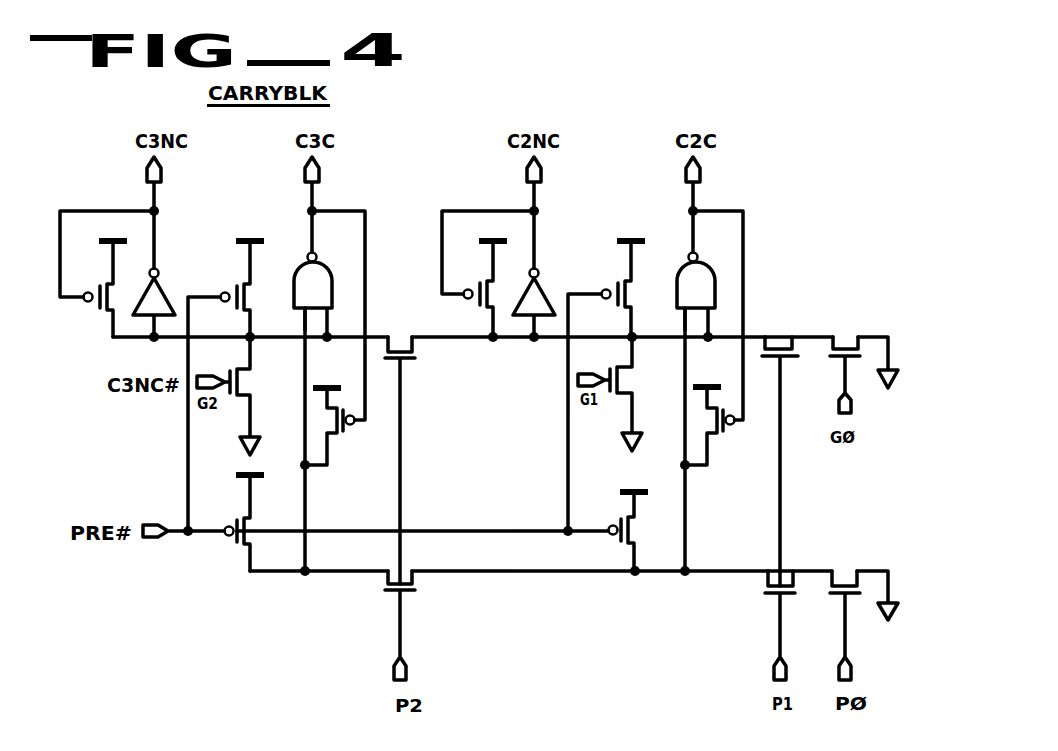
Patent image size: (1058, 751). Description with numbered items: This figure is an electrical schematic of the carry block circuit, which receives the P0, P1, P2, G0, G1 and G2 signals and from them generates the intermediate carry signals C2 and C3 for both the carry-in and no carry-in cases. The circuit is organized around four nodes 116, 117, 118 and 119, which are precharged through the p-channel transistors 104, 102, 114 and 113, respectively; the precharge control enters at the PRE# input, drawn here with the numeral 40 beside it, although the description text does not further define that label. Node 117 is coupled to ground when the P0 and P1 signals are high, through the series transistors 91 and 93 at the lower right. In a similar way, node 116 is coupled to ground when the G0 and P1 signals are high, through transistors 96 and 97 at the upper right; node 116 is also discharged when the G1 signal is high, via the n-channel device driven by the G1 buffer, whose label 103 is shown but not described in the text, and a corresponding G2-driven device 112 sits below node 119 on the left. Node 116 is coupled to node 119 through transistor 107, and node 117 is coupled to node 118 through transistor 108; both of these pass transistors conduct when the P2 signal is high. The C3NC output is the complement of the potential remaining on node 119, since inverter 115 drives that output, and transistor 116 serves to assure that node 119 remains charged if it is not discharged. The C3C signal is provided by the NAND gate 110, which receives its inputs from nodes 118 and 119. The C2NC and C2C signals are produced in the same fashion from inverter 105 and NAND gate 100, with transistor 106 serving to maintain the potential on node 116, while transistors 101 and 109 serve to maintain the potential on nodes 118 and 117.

The PRE# input node 40 is at (207, 535).
The transistor 91 is at (858, 587).
The transistor 93 is at (796, 586).
The transistor 96 is at (797, 351).
The transistor 97 is at (860, 349).
The NAND gate 100 is at (706, 301).
The transistor 101 is at (706, 430).
The p-channel transistor 102 is at (633, 531).
The N-channel transistor 103 is at (629, 384).
The p-channel transistor 104 is at (628, 294).
The inverter 105 is at (546, 291).
The transistor 106 is at (487, 294).
The transistor 107 is at (399, 337).
The transistor 108 is at (402, 575).
The transistor 109 is at (331, 428).
The NAND gate 110 is at (323, 301).
The N-channel transistor 112 is at (248, 381).
The p-channel transistor 113 is at (250, 296).
The p-channel transistor 114 is at (248, 522).
The inverter 115 is at (166, 293).
The node 116 is at (134, 284).
The node 117 is at (503, 572).
The node 118 is at (327, 572).
The node 119 is at (352, 340).